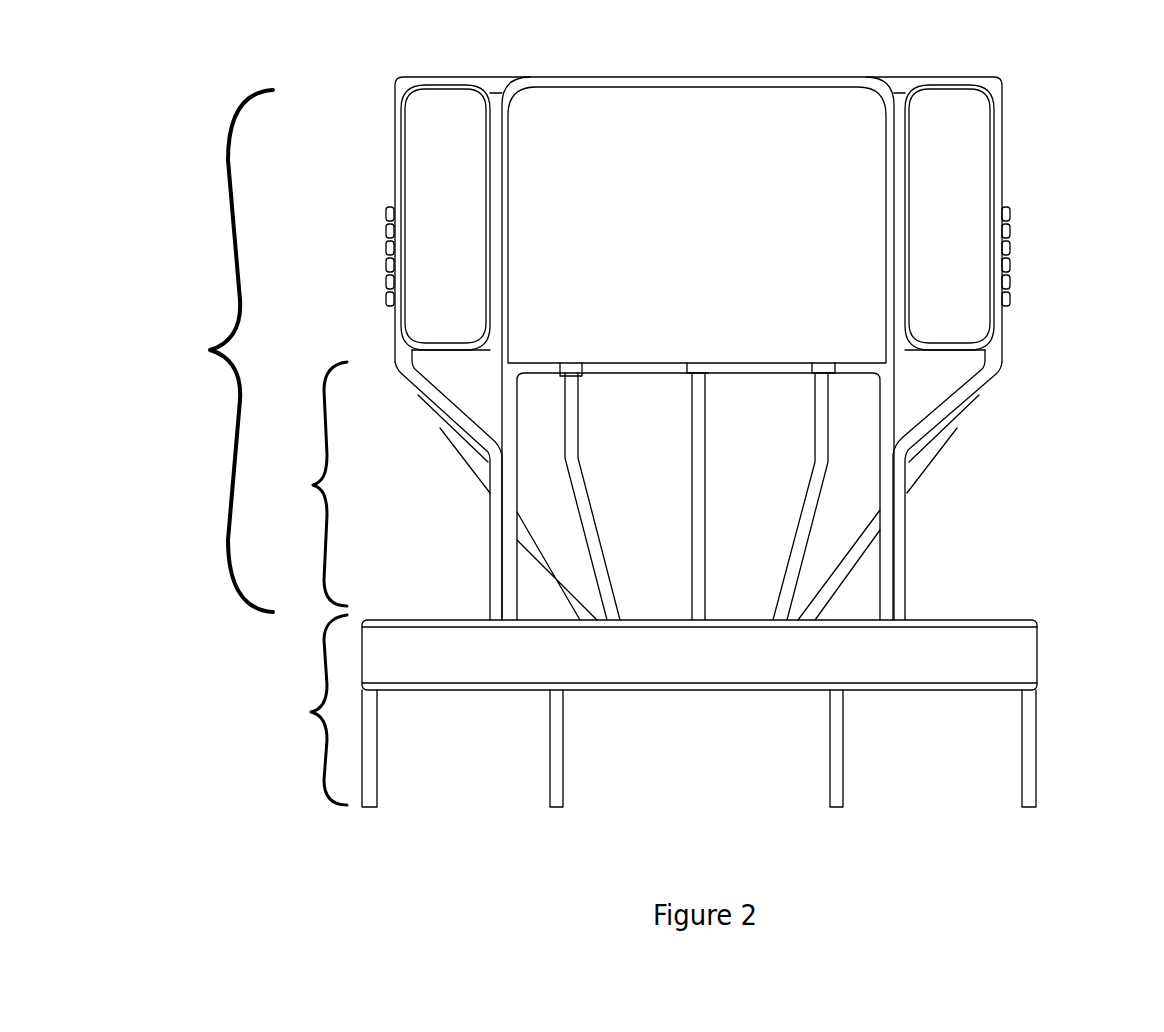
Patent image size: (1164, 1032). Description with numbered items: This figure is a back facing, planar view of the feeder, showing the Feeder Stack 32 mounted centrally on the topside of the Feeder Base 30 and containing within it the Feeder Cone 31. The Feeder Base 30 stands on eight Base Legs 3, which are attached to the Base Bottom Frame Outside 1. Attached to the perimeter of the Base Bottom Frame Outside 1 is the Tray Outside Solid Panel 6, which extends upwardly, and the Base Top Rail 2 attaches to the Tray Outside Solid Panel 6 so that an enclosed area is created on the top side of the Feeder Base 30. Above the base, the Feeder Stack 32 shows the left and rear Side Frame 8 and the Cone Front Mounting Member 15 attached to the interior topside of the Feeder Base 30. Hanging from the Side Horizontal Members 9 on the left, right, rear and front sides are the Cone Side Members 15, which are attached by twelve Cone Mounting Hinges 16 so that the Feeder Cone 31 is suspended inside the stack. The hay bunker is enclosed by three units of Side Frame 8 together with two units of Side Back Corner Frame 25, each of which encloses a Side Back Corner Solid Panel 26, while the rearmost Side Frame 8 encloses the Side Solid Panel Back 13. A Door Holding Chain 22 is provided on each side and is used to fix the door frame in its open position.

The Base Bottom Frame Outside 1 is at (973, 687).
The Base Top Rail 2 is at (973, 625).
The Base Legs 3 is at (368, 775).
The Tray Outside Solid Panel 6 is at (1012, 658).
The Side Frame 8 is at (738, 78).
The Side Horizontal Members 9 is at (768, 367).
The Side Solid Panel Back 13 is at (705, 145).
The Cone Side Members 15 is at (468, 453).
The Cone Mounting Hinges 16 is at (823, 367).
The Door Holding Chain 22 is at (385, 249).
The Side Back Corner Frame 25 is at (489, 93).
The Side Back Corner Solid Panel 26 is at (437, 110).
The Feeder Base 30 is at (314, 710).
The Feeder Cone 31 is at (317, 484).
The Feeder Stack 32 is at (227, 351).